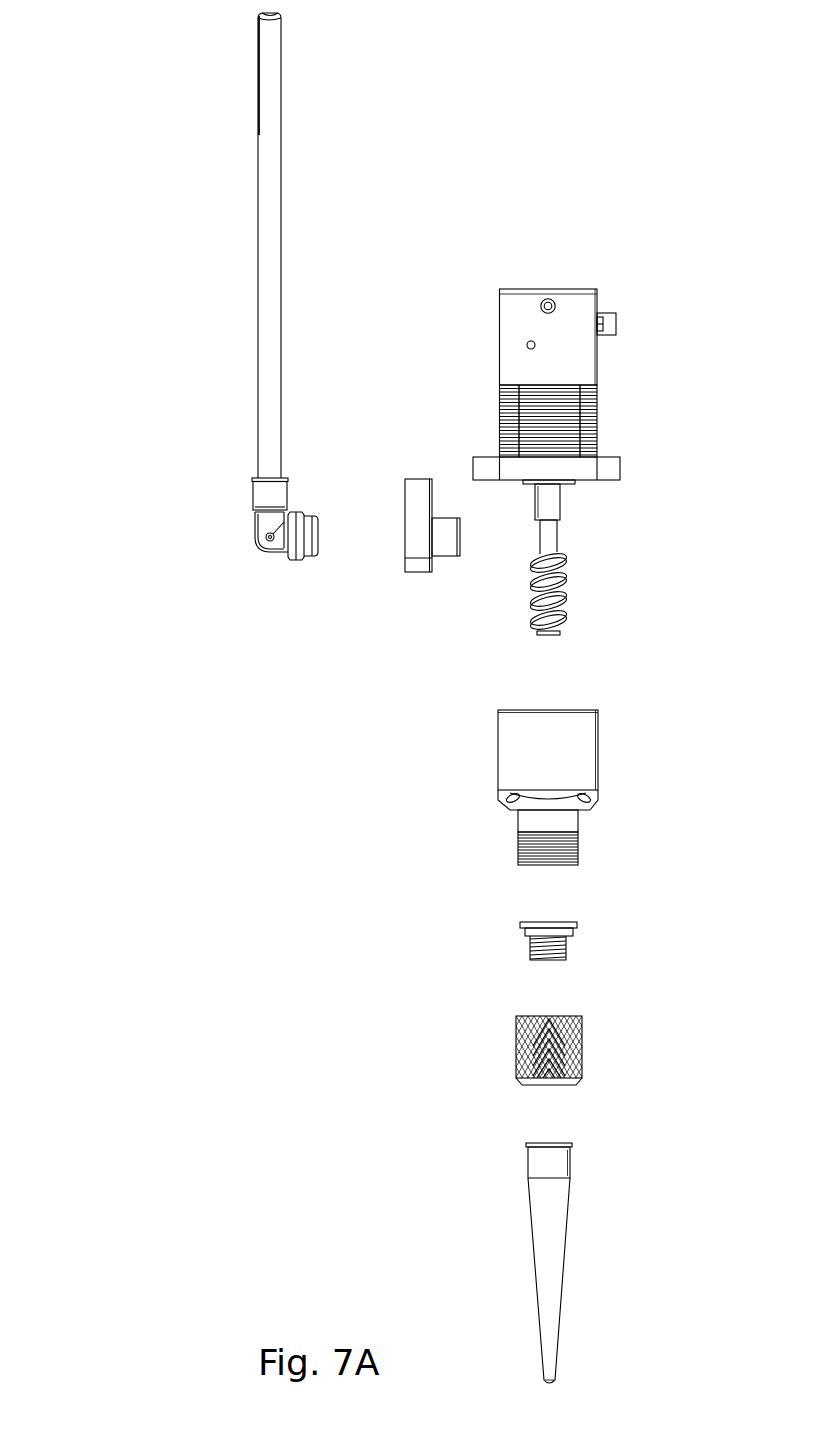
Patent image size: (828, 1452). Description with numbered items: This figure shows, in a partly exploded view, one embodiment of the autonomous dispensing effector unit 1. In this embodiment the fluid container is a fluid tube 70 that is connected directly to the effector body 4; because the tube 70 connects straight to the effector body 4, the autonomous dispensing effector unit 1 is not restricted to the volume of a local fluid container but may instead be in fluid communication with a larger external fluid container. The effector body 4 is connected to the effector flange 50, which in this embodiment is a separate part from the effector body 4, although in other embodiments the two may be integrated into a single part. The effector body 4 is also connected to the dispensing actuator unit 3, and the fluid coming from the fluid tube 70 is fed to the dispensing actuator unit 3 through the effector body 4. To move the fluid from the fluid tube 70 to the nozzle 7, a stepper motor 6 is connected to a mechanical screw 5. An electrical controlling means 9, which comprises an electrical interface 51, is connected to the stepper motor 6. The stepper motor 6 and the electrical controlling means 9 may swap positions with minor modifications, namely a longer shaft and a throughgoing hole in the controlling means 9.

The autonomous dispensing effector unit 1 is at (128, 163).
The fluid tube 70 is at (268, 241).
The electrical interface 51 is at (609, 326).
The electrical controlling means 9 is at (578, 345).
The stepper motor 6 is at (588, 432).
The effector flange 50 is at (588, 467).
The effector body 4 is at (416, 548).
The mechanical screw 5 is at (543, 602).
The dispensing actuator unit 3 is at (578, 760).
The nozzle 7 is at (548, 1257).